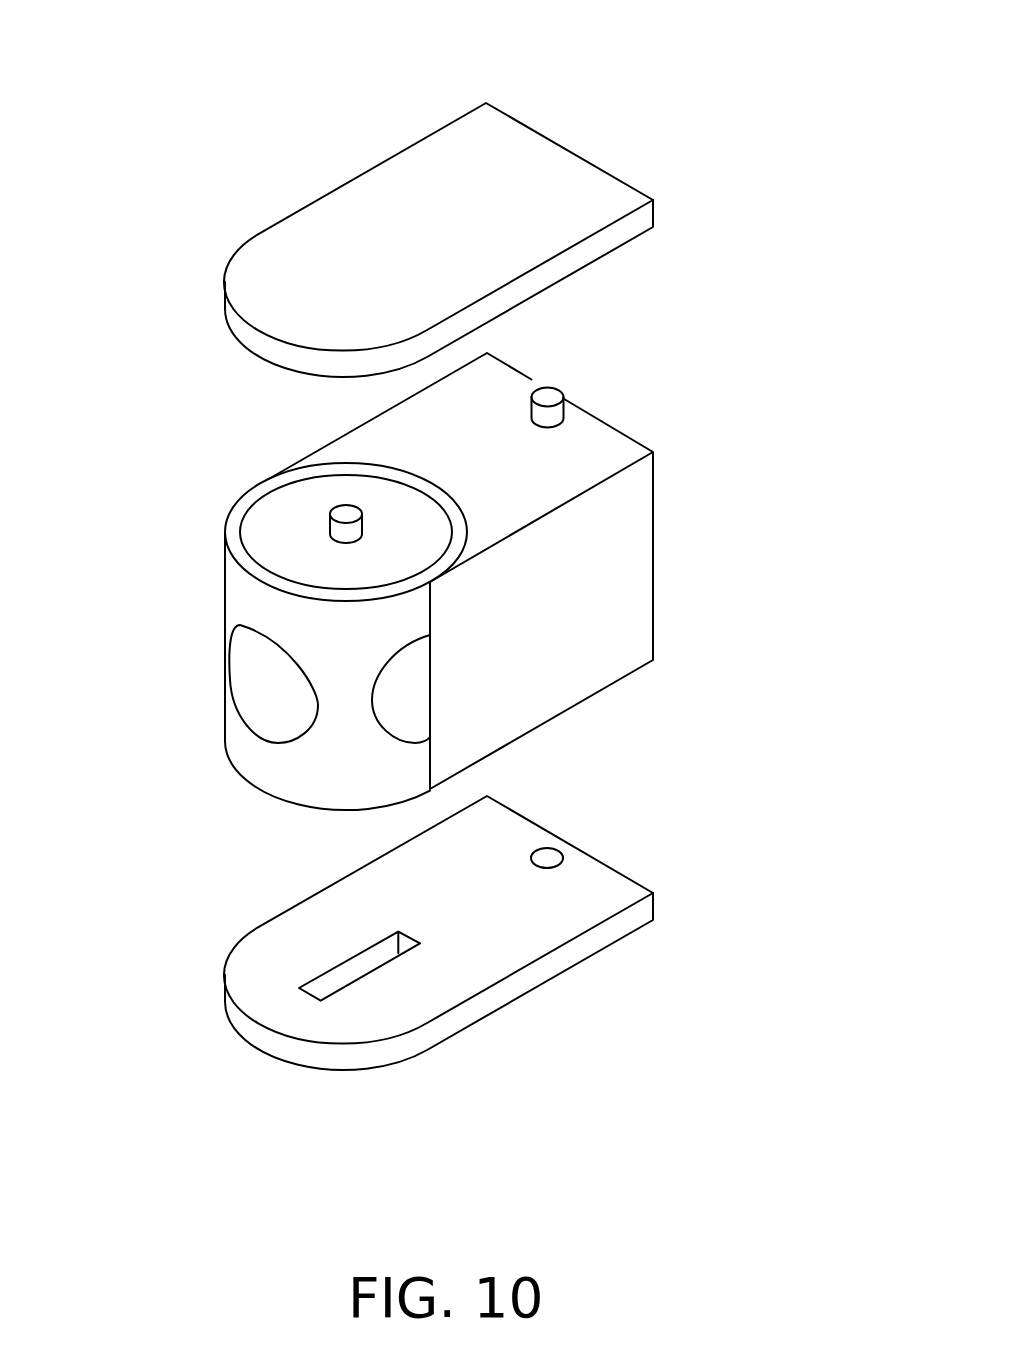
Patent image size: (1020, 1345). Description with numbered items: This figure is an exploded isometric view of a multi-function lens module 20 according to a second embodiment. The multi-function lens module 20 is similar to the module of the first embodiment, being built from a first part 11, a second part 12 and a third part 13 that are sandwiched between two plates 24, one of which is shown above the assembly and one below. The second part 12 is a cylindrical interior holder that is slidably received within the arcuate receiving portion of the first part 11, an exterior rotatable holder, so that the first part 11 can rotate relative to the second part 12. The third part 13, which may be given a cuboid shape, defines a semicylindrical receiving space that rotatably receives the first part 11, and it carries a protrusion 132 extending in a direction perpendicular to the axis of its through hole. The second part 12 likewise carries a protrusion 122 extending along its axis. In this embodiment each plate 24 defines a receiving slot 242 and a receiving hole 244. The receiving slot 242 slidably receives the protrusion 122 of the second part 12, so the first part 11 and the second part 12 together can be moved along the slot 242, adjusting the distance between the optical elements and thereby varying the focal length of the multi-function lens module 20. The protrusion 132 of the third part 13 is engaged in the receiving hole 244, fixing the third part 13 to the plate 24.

The multi-function lens module 20 is at (443, 28).
The plate 24 is at (532, 176).
The first part 11 is at (238, 602).
The second part 12 is at (273, 542).
The protrusion 122 is at (343, 513).
The third part 13 is at (613, 563).
The protrusion 132 is at (547, 402).
The receiving slot 242 is at (347, 977).
The receiving hole 244 is at (548, 860).